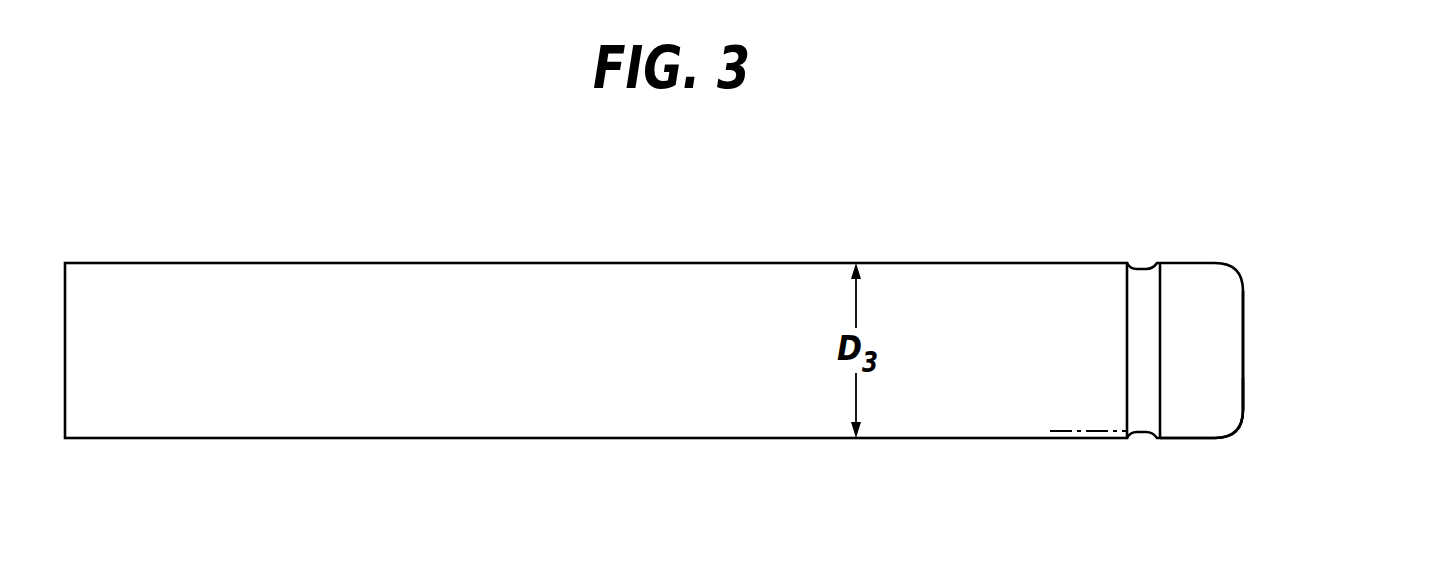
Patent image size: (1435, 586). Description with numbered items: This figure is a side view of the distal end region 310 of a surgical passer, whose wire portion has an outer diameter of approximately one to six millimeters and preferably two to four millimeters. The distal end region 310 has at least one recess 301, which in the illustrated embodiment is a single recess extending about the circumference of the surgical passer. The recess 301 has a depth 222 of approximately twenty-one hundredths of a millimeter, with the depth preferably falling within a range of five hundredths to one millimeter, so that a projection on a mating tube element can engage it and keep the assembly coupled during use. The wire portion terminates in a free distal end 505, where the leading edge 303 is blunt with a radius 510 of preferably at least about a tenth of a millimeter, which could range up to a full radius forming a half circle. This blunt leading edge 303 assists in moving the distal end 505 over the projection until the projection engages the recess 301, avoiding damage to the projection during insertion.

The distal end region 310 is at (1043, 183).
The radius 510 is at (1236, 271).
The free distal end 505 is at (1244, 322).
The leading edge 303 is at (1243, 378).
The recess 301 is at (1138, 434).
The depth 222 is at (1063, 481).